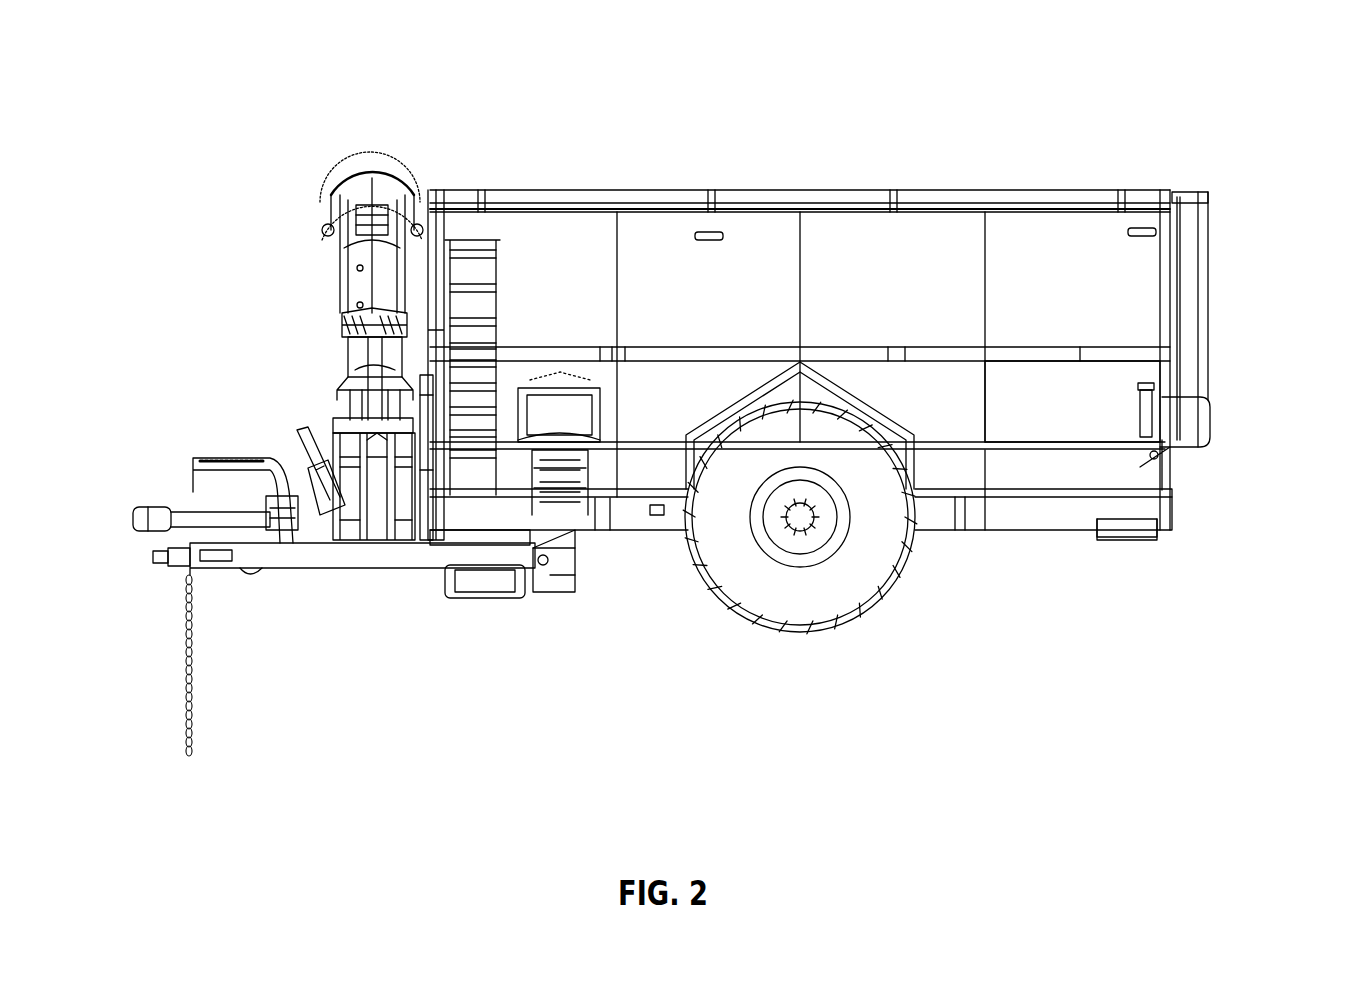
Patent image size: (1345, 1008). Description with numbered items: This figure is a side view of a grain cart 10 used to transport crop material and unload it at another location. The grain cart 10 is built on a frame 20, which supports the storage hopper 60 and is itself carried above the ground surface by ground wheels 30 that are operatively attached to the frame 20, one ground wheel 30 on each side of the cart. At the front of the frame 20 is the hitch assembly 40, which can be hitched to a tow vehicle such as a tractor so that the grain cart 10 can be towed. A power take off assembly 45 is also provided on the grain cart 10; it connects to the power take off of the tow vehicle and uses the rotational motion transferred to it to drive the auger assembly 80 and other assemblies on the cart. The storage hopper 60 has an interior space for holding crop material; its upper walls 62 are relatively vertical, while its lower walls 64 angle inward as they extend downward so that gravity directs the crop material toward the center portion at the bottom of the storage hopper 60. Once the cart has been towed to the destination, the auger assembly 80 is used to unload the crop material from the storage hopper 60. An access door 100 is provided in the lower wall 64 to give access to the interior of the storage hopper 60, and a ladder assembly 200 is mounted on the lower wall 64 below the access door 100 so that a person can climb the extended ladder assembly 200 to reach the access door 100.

The grain cart 10 is at (1058, 118).
The frame 20 is at (668, 517).
The ground wheels 30 is at (870, 578).
The hitch assembly 40 is at (153, 557).
The power take off (PTO) assembly 45 is at (163, 507).
The storage hopper 60 is at (600, 237).
The upper walls 62 is at (1123, 288).
The lower walls 64 is at (1110, 406).
The auger assembly 80 is at (348, 285).
The access door 100 is at (533, 427).
The ladder assembly 200 is at (583, 482).